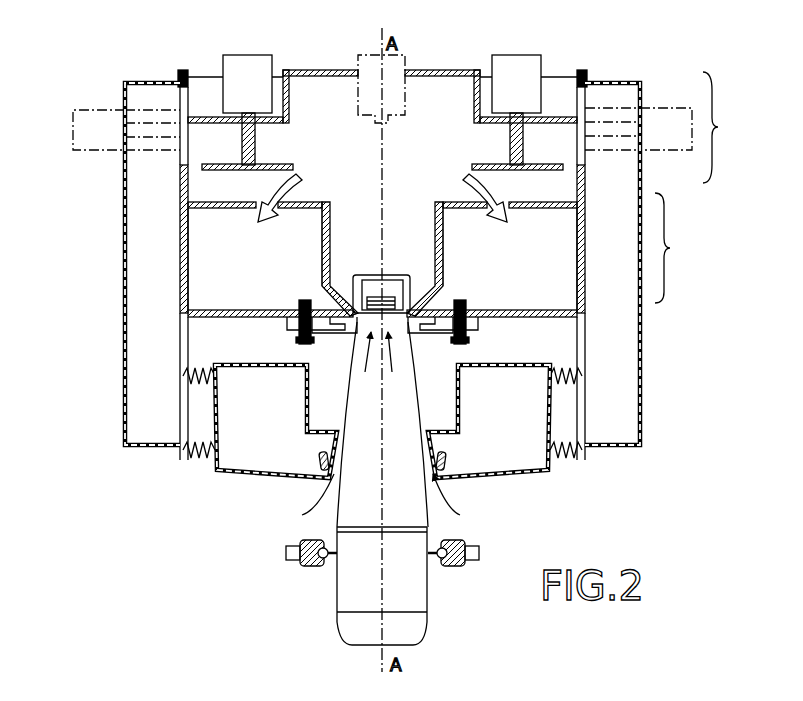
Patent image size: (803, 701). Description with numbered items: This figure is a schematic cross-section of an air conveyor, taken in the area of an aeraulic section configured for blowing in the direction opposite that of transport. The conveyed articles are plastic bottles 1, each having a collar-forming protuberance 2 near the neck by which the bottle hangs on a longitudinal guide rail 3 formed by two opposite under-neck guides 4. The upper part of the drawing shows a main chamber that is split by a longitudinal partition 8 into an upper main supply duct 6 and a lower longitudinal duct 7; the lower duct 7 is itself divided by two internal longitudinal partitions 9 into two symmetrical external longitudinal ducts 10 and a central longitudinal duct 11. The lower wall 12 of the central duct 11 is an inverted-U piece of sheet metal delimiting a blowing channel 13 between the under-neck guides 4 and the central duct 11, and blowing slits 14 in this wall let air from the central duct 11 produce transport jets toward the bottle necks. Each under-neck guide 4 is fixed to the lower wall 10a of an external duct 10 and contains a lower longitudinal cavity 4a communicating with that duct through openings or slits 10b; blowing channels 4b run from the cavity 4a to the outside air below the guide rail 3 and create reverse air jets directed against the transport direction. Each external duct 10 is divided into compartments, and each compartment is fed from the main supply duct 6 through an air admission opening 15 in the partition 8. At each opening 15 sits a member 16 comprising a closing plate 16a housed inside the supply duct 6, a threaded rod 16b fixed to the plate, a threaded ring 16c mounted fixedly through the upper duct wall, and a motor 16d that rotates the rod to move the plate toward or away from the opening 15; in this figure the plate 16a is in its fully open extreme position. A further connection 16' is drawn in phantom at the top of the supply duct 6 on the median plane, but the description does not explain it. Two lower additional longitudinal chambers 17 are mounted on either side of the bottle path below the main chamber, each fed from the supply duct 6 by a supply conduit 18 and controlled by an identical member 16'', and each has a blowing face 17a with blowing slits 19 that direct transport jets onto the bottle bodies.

The plastic bottle 1 is at (417, 585).
The collar-forming protuberance 2 is at (389, 345).
The longitudinal guide rail 3 is at (373, 345).
The under-neck guide 4 is at (328, 330).
The lower longitudinal cavity 4a is at (293, 327).
The blowing channel 4b is at (365, 325).
The main supply duct 6 is at (717, 127).
The lower longitudinal duct 7 is at (668, 248).
The longitudinal partition 8 is at (447, 200).
The internal longitudinal partition 9 is at (325, 222).
The external longitudinal duct 10 is at (205, 286).
The lower wall 10a is at (213, 318).
The openings or slits 10b is at (322, 304).
The central longitudinal duct 11 is at (348, 207).
The lower wall 12 is at (388, 280).
The blowing channel 13 is at (403, 280).
The blowing slit 14 is at (326, 299).
The air admission opening 15 is at (213, 210).
The member 16 is at (382, 102).
The central supply pipe 16' is at (409, 88).
The member 16'' is at (388, 85).
The closing plate 16a is at (205, 171).
The threaded rod 16b is at (257, 144).
The ring 16c is at (290, 75).
The motor 16d is at (247, 63).
The lower additional longitudinal chamber 17 is at (257, 420).
The blowing face 17a is at (383, 501).
The supply conduit 18 is at (123, 410).
The blowing slit 19 is at (321, 458).